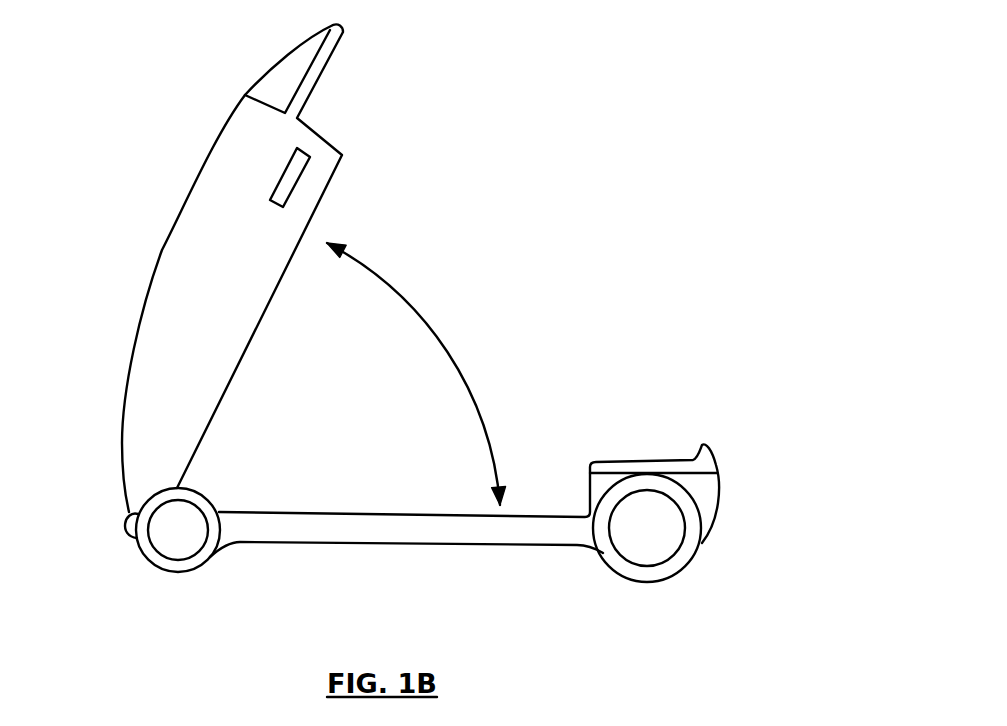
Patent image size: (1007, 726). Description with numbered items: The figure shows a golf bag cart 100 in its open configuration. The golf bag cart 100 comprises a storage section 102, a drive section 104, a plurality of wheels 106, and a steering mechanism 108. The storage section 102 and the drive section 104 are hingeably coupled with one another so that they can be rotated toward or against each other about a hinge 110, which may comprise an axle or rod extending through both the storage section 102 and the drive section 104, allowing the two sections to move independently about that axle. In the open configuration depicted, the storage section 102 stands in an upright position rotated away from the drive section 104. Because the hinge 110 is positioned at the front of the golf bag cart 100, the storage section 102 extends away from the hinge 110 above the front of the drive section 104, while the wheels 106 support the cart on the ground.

The golf bag cart 100 is at (636, 244).
The storage section 102 is at (193, 272).
The drive section 104 is at (447, 527).
The wheels 106 is at (173, 540).
The steering mechanism 108 is at (293, 172).
The hinge 110 is at (132, 515).